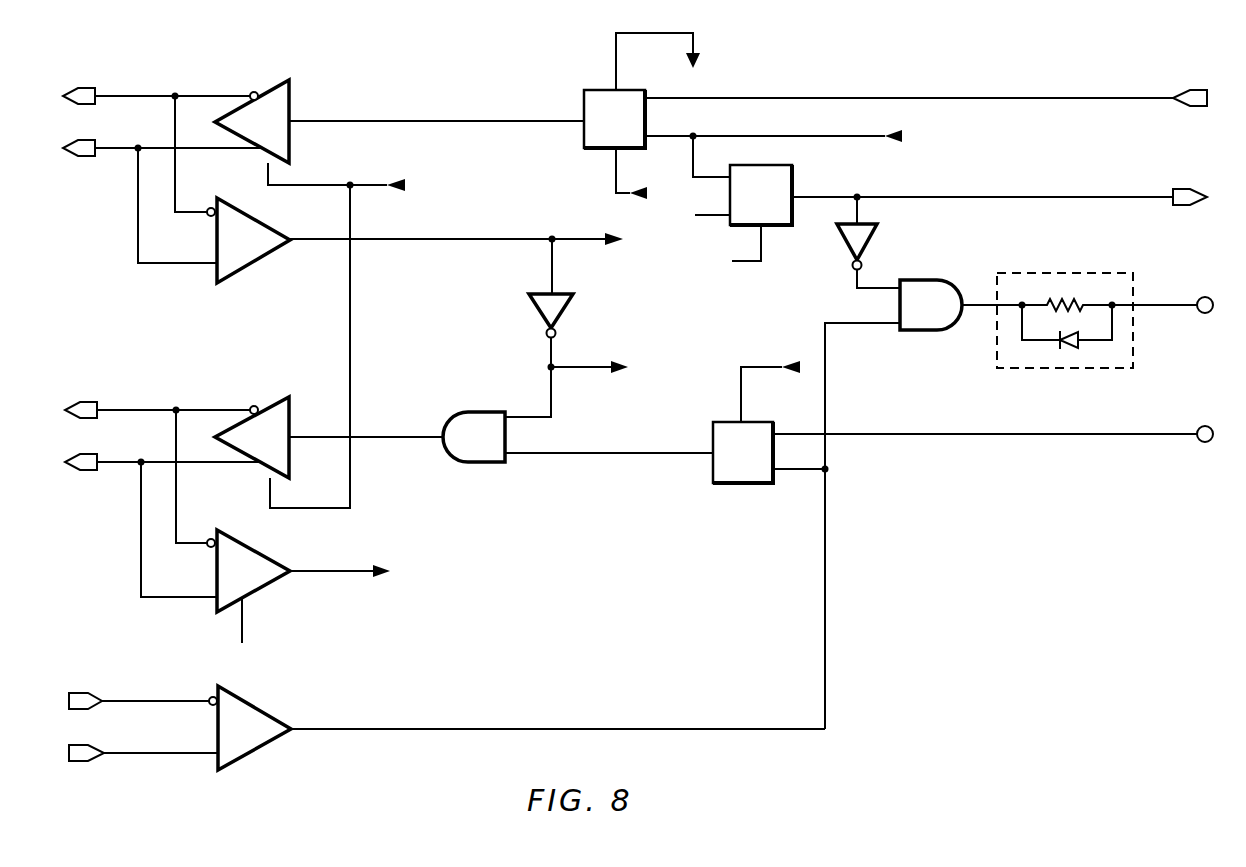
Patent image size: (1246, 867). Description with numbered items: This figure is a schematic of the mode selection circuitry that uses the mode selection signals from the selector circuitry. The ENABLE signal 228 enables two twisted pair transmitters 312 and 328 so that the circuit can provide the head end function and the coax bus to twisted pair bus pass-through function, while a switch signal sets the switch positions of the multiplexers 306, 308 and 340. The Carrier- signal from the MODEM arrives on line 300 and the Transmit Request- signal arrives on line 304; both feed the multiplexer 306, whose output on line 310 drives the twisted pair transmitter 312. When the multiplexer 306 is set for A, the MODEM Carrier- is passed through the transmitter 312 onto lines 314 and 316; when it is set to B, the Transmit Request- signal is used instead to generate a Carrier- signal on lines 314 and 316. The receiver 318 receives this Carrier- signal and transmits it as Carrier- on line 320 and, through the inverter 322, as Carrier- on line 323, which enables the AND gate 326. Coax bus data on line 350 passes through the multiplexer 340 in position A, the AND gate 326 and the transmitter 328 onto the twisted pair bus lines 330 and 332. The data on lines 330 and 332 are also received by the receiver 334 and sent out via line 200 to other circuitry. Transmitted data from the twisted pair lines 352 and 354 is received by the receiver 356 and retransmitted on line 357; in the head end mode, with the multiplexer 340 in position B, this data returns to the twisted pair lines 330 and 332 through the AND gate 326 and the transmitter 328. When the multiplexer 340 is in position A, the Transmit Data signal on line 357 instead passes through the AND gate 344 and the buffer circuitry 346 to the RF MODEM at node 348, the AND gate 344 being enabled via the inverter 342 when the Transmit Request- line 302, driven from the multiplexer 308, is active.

The line 200 is at (306, 571).
The ENABLE signal 228 is at (365, 182).
The line 300 is at (1024, 98).
The Transmit Request- line 302 is at (1028, 197).
The line 304 is at (796, 136).
The multiplexer 306 is at (642, 116).
The multiplexer 308 is at (726, 213).
The line 310 is at (433, 117).
The twisted pair transmitter 312 is at (252, 121).
The line 314 is at (118, 96).
The line 316 is at (118, 148).
The receiver 318 is at (214, 189).
The line 320 is at (566, 237).
The inverter 322 is at (564, 305).
The line 323 is at (578, 365).
The AND gate 326 is at (501, 437).
The transmitter 328 is at (252, 437).
The twisted pair bus line 330 is at (133, 399).
The twisted pair bus line 332 is at (113, 454).
The receiver 334 is at (215, 537).
The multiplexer 340 is at (771, 422).
The inverter 342 is at (870, 234).
The AND gate 344 is at (961, 305).
The buffer circuitry 346 is at (1066, 272).
The node 348 is at (1194, 298).
The line 350 is at (1194, 426).
The twisted pair line 352 is at (135, 701).
The twisted pair line 354 is at (135, 753).
The receiver 356 is at (517, 728).
The line 357 is at (825, 590).